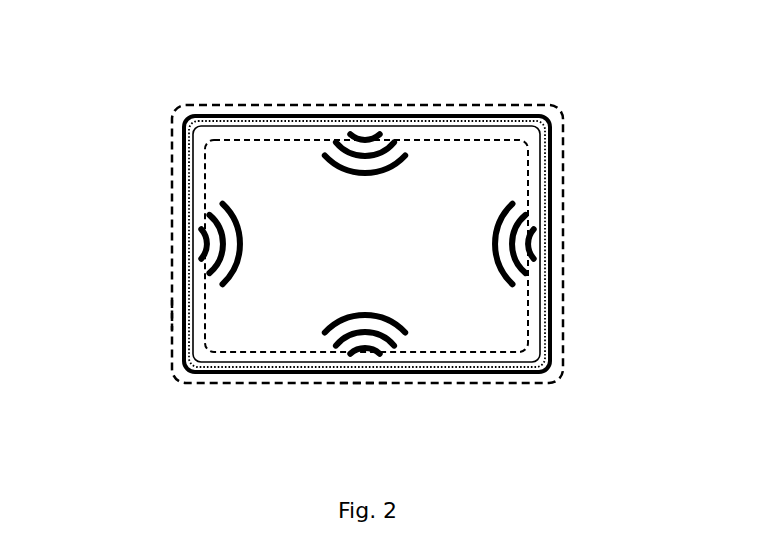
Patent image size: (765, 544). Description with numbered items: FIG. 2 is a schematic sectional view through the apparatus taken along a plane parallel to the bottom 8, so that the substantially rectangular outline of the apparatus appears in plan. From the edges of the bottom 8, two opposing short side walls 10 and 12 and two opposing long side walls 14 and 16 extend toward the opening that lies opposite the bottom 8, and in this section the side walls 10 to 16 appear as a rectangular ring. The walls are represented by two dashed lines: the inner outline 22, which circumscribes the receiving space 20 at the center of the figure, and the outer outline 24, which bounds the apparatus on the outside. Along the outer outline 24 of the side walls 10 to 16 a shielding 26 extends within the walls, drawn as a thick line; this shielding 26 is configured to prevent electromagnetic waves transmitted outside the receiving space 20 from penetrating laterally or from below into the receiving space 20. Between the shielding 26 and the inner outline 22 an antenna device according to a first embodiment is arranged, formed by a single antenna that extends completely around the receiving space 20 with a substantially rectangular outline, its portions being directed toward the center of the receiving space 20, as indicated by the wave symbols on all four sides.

The bottom 8 is at (298, 213).
The short side wall 10 is at (143, 238).
The short side wall 12 is at (596, 257).
The long side wall 14 is at (365, 416).
The long side wall 16 is at (352, 84).
The receiving space 20 is at (245, 175).
The inner outline 22 is at (205, 288).
The outer outline 24 is at (172, 316).
The shielding 26 is at (187, 190).